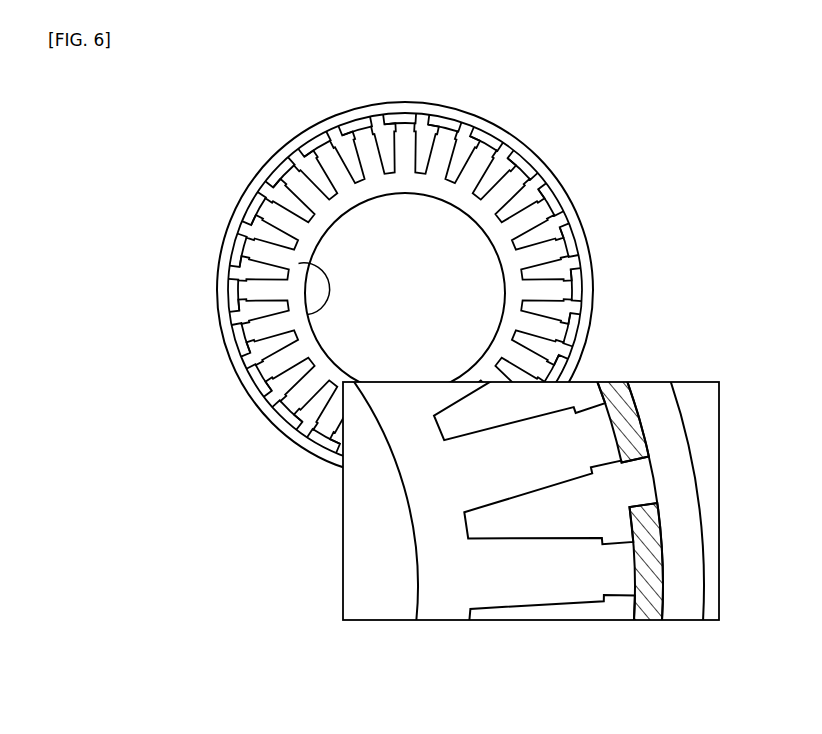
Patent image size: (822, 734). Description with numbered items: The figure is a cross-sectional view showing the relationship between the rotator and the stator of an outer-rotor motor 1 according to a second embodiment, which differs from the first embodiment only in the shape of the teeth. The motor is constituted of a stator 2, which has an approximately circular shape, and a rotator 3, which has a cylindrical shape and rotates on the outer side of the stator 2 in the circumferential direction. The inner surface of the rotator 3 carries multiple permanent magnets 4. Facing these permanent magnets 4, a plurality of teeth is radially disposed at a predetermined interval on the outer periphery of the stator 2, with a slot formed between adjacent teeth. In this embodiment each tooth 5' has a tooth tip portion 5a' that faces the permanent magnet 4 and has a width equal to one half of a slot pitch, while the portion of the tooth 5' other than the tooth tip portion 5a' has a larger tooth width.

The outer-rotor motor 1 is at (578, 173).
The stator 2 is at (308, 315).
The rotator 3 is at (248, 203).
The permanent magnets 4 is at (280, 167).
The tooth 5' is at (405, 400).
The tooth tip portion 5a' is at (637, 514).